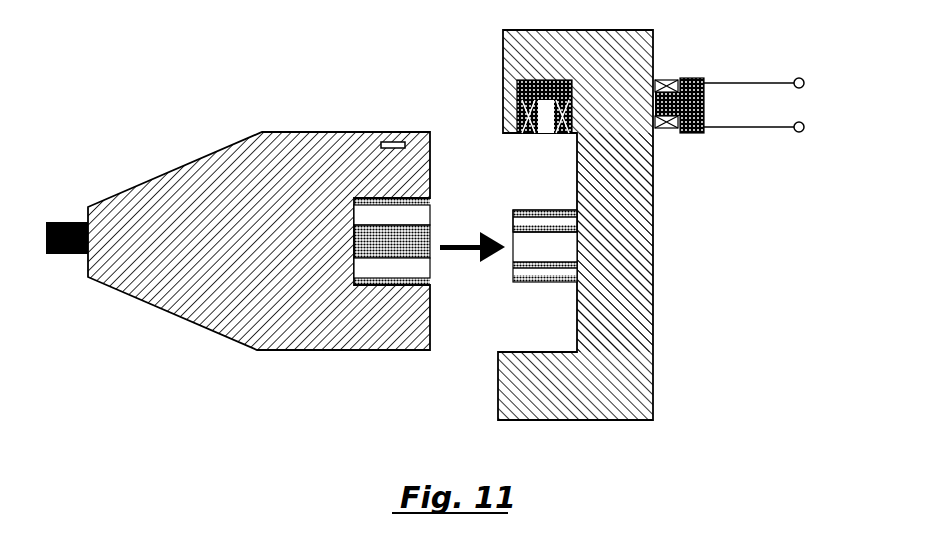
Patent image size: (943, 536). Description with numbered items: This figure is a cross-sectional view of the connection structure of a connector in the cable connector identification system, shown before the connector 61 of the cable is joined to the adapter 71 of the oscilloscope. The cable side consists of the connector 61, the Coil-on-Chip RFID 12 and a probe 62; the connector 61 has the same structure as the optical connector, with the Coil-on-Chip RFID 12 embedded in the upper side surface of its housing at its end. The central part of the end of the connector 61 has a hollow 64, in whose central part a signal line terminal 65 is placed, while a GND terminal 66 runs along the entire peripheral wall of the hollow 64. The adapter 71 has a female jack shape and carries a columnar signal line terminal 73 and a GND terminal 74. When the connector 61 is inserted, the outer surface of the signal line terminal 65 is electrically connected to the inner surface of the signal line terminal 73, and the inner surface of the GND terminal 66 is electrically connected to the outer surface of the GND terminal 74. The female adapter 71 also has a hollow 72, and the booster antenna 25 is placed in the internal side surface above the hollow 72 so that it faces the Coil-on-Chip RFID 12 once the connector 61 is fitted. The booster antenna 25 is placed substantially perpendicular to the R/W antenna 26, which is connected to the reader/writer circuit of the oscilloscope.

The Coil-on-Chip RFID 12 is at (378, 132).
The booster antenna 25 is at (517, 84).
The R/W antenna 26 is at (700, 78).
The connector 61 is at (290, 330).
The probe 62 is at (62, 222).
The hollow 64 is at (412, 214).
The signal line terminal 65 is at (370, 250).
The GND terminal 66 is at (430, 287).
The adapter 71 is at (498, 352).
The hollow 72 is at (577, 180).
The signal line terminal 73 is at (555, 283).
The GND terminal 74 is at (533, 210).